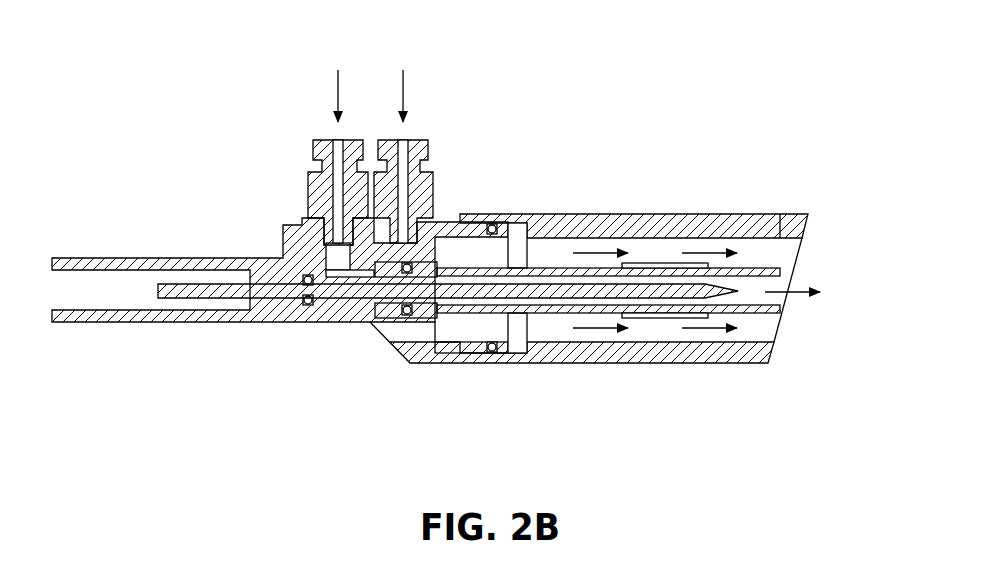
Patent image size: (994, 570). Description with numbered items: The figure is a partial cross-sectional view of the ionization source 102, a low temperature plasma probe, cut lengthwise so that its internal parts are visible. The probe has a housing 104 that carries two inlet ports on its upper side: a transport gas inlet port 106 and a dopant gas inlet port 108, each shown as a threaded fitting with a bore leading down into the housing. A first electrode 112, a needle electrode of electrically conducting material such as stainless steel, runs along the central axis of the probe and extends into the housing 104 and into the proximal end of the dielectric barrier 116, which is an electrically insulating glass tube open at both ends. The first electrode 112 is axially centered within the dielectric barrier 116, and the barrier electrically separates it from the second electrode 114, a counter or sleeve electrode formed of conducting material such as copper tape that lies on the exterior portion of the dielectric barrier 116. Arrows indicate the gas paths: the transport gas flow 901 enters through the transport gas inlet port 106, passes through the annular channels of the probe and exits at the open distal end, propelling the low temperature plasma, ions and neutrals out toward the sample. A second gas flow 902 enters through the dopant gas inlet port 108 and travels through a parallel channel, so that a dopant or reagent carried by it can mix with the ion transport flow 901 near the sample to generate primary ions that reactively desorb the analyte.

The ionization source 102 is at (142, 110).
The housing 104 is at (518, 213).
The transport gas inlet port 106 is at (340, 140).
The dopant gas inlet port 108 is at (403, 140).
The first electrode 112 is at (697, 288).
The second electrode 114 is at (655, 268).
The dielectric barrier 116 is at (748, 273).
The transport gas flow 901 is at (323, 73).
The gas flow 902 is at (418, 73).